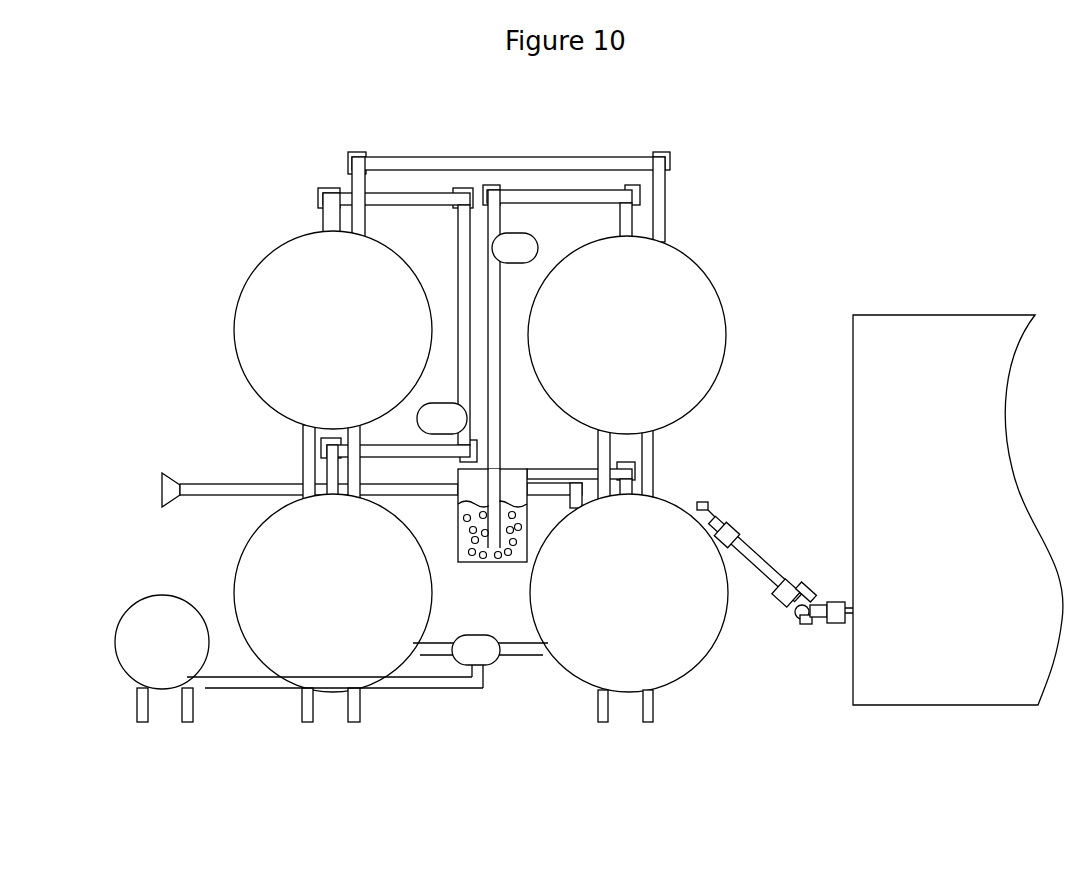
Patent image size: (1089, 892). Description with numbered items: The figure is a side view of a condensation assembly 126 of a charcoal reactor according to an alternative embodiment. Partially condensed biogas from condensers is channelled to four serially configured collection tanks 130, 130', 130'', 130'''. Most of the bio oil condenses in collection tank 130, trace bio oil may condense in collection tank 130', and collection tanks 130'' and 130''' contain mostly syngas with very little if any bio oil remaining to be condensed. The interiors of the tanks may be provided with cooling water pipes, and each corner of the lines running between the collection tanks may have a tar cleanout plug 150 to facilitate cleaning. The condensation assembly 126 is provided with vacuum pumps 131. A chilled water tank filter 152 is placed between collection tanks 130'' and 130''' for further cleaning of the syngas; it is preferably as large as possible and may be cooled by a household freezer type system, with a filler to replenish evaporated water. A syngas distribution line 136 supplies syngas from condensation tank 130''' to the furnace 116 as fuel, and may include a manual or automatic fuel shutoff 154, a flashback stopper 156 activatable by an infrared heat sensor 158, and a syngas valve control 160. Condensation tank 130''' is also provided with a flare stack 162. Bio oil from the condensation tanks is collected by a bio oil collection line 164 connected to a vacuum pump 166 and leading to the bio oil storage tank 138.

The furnace 116 is at (957, 315).
The condensation assembly 126 is at (768, 163).
The collection tank 130 is at (333, 608).
The collection tank 130' is at (333, 330).
The collection tank 130'' is at (627, 335).
The collection tank 130''' is at (629, 608).
The vacuum pump 131 is at (512, 233).
The syngas distribution line 136 is at (745, 543).
The bio oil storage tank 138 is at (127, 613).
The tar cleanout plug 150 is at (350, 163).
The chilled water tank filter 152 is at (495, 563).
The fuel shutoff 154 is at (753, 563).
The flashback stopper 156 is at (798, 621).
The infrared heat sensor 158 is at (815, 587).
The syngas valve control 160 is at (835, 624).
The flare stack 162 is at (228, 485).
The bio oil collection line 164 is at (373, 690).
The vacuum pump 166 is at (493, 667).